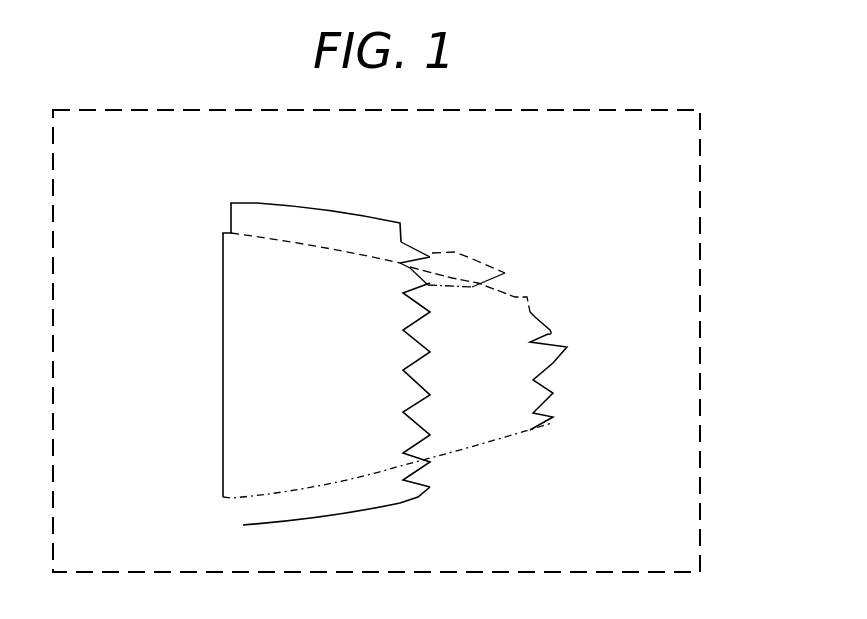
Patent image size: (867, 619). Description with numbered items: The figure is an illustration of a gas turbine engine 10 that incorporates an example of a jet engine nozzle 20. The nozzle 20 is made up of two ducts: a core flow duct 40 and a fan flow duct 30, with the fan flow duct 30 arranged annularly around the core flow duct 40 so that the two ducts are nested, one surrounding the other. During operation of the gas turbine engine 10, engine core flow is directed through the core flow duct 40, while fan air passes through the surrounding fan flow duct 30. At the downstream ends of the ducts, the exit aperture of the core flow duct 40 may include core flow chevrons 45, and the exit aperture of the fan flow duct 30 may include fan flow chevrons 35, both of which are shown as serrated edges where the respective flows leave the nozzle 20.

The gas turbine engine 10 is at (702, 152).
The jet engine nozzle 20 is at (489, 241).
The fan flow duct 30 is at (333, 237).
The fan flow chevrons 35 is at (505, 273).
The core flow duct 40 is at (480, 408).
The core flow chevrons 45 is at (567, 347).